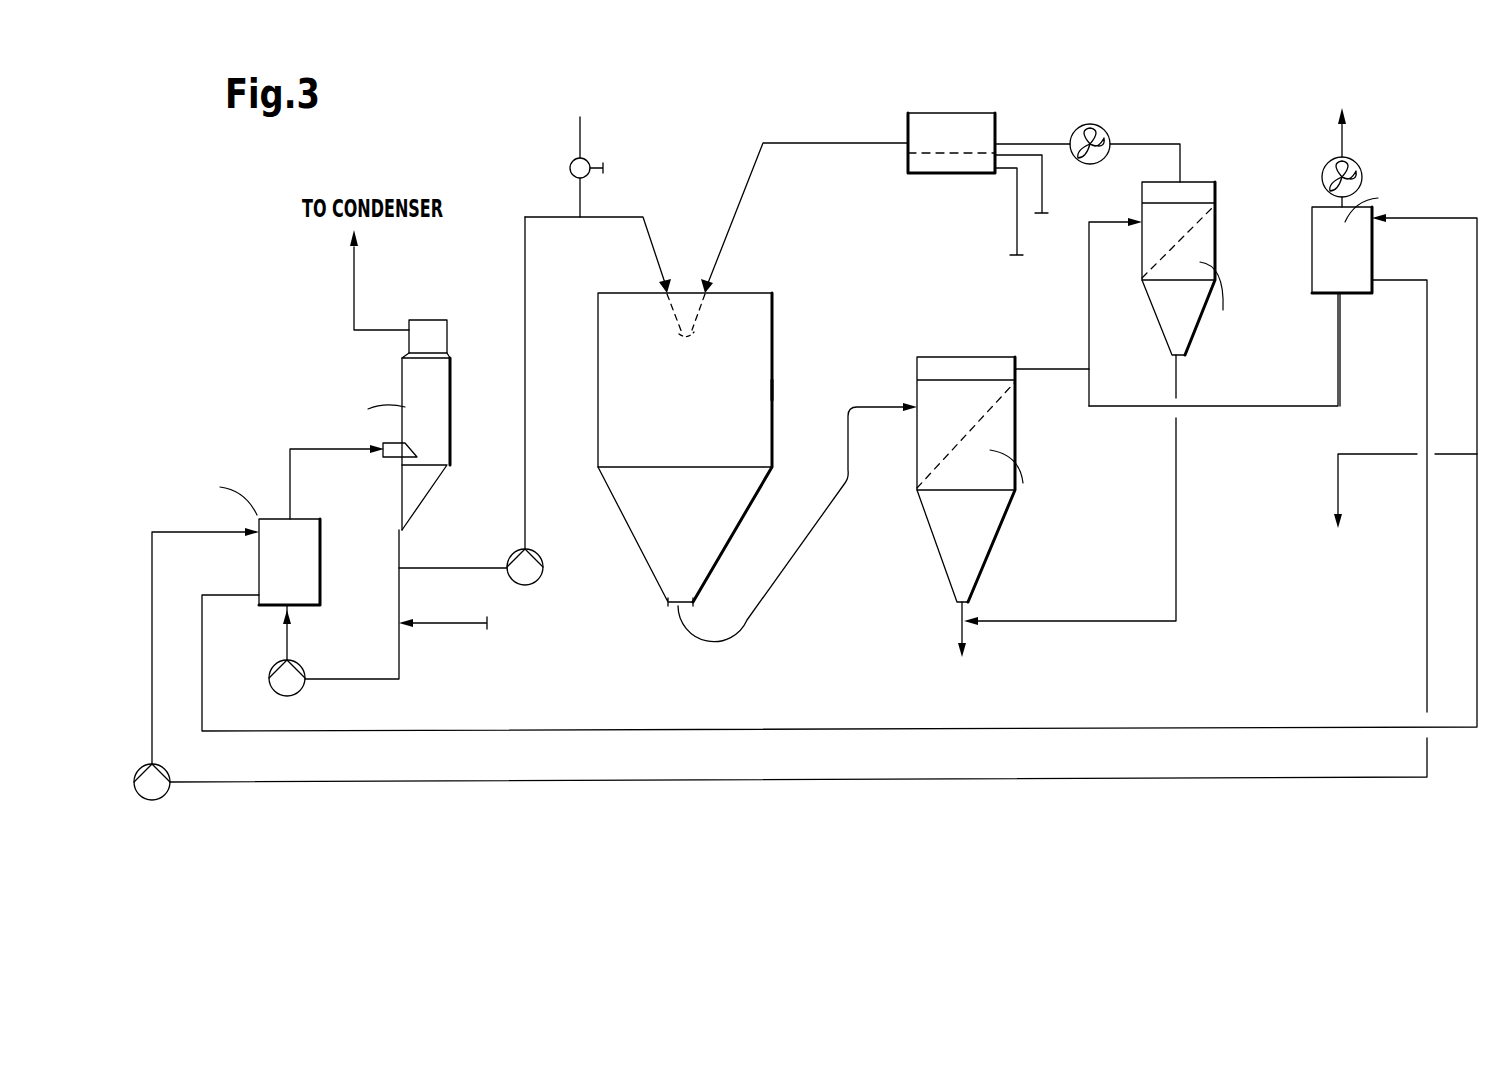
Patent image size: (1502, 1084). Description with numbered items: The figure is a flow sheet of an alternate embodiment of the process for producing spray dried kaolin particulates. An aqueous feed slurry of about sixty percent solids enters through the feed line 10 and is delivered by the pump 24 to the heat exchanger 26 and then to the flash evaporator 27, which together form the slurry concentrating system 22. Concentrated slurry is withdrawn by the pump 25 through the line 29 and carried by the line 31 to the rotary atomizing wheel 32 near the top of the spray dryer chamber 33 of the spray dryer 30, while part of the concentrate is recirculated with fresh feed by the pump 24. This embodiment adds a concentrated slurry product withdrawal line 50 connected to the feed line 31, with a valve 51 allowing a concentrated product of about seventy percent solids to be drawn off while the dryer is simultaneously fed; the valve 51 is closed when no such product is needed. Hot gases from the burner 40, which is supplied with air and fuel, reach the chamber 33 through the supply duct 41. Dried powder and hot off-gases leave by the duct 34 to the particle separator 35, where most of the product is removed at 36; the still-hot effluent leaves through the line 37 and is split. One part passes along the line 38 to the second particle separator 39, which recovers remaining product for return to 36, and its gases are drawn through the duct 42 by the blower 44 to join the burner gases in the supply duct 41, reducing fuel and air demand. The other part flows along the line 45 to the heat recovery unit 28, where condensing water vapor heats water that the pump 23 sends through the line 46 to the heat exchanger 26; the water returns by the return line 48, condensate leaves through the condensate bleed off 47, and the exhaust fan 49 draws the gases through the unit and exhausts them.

The feed line 10 is at (467, 622).
The slurry concentrating system 22 is at (290, 444).
The pump 23 is at (167, 796).
The pump 24 is at (304, 690).
The pump 25 is at (544, 572).
The heat exchanger 26 is at (322, 528).
The flash evaporator 27 is at (441, 364).
The heat recovery unit 28 is at (1373, 248).
The line 29 is at (472, 566).
The spray dryer 30 is at (786, 336).
The line 31 is at (637, 207).
The rotary atomizing wheel 32 is at (677, 330).
The spray dryer chamber 33 is at (774, 393).
The duct 34 is at (795, 550).
The particle separator 35 is at (985, 355).
The particulate product removal point 36 is at (965, 628).
The line 37 is at (1067, 368).
The line 38 is at (1088, 298).
The second particle separator 39 is at (1220, 210).
The burner 40 is at (908, 113).
The supply duct 41 is at (752, 178).
The duct 42 is at (1182, 148).
The blower 44 is at (1082, 125).
The line 45 is at (1147, 407).
The line 46 is at (582, 783).
The condensate bleed off 47 is at (1340, 487).
The return line 48 is at (658, 728).
The exhaust fan 49 is at (1347, 137).
The concentrated slurry product withdrawal line 50 is at (583, 122).
The valve 51 is at (570, 164).